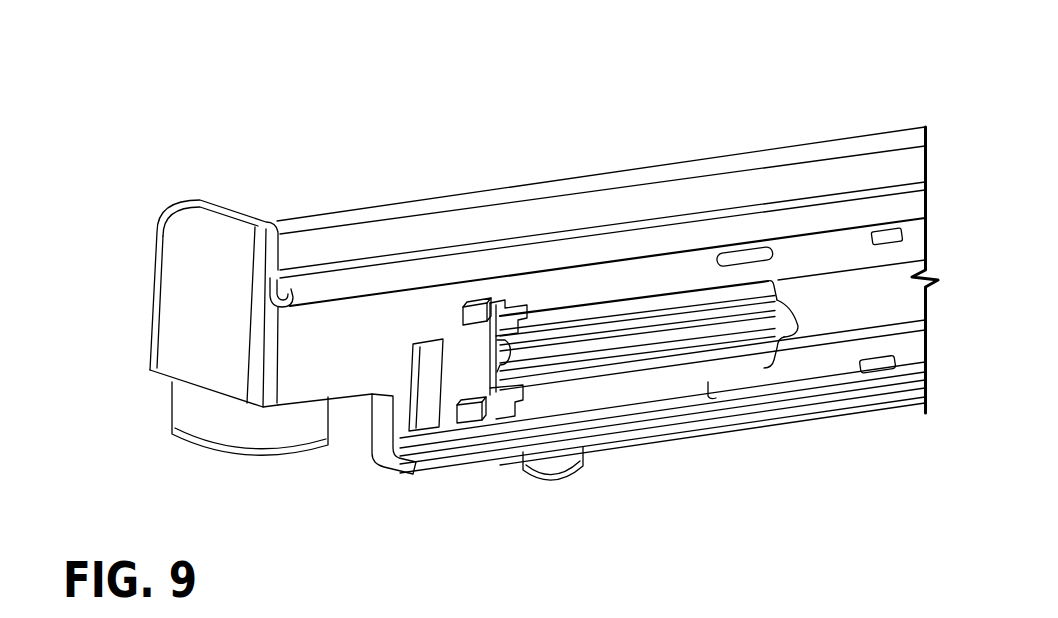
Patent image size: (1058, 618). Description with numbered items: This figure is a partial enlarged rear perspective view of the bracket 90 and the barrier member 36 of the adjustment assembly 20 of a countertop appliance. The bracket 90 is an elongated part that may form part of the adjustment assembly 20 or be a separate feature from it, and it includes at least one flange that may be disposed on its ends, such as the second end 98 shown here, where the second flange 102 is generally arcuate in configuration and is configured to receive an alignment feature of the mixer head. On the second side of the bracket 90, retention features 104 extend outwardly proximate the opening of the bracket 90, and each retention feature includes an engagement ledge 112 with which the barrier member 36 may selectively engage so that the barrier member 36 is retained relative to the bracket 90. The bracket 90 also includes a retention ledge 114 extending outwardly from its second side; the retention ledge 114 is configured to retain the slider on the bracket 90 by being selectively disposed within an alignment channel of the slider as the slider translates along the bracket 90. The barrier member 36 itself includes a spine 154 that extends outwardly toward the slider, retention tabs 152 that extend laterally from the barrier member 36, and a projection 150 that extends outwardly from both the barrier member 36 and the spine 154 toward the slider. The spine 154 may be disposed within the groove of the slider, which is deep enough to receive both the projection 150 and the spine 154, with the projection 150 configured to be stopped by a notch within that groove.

The adjustment assembly 20 is at (146, 174).
The barrier member 36 is at (635, 375).
The bracket 90 is at (812, 150).
The second end 98 is at (180, 287).
The second flange 102 is at (187, 416).
The retention features 104 is at (478, 315).
The engagement ledge 112 is at (505, 305).
The retention ledge 114 is at (320, 290).
The projection 150 is at (804, 328).
The retention tabs 152 is at (768, 274).
The spine 154 is at (660, 340).